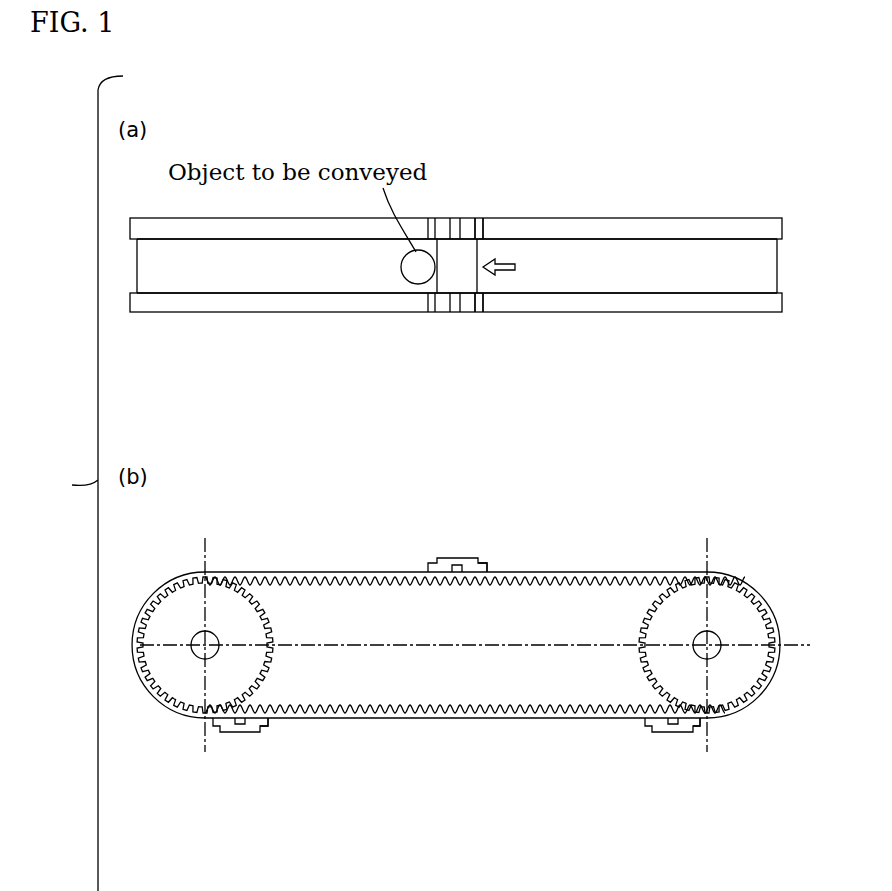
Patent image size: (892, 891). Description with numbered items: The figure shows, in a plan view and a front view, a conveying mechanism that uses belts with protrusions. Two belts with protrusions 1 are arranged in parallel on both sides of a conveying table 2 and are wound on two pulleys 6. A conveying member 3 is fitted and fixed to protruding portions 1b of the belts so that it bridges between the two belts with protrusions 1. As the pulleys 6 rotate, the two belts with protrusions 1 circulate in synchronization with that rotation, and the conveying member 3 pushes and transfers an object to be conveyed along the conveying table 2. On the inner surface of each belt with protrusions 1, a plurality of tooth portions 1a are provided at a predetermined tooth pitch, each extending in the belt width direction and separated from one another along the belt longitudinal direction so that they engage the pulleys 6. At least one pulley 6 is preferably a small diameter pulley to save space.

The belt with protrusions 1 is at (650, 232).
The tooth portion 1a is at (550, 584).
The protruding portion 1b is at (484, 218).
The conveying table 2 is at (752, 264).
The conveying member 3 is at (443, 255).
The pulley 6 is at (228, 610).